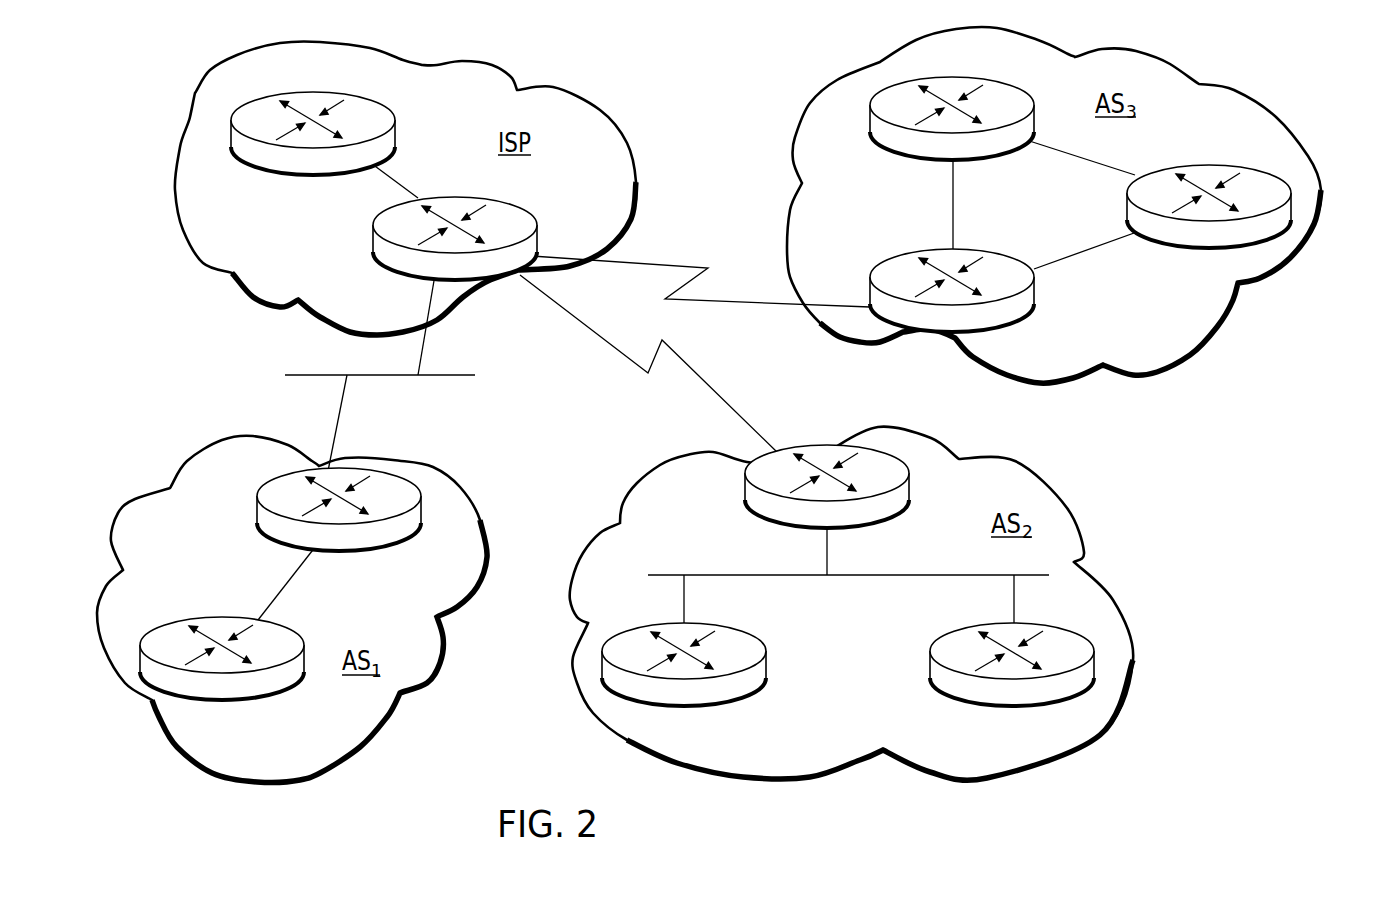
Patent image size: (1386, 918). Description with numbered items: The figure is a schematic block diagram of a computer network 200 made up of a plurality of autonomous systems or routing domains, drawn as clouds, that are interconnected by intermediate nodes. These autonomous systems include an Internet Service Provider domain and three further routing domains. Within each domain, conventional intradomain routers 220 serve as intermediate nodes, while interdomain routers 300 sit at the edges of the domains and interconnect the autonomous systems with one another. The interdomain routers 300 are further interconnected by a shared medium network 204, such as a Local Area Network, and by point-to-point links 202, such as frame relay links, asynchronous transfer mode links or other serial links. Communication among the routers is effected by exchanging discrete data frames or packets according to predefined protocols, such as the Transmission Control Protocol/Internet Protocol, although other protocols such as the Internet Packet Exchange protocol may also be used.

The computer network 200 is at (1352, 100).
The point-to-point link 202 is at (783, 309).
The shared medium network 204 is at (438, 378).
The intradomain router 220 is at (312, 90).
The interdomain router 300 is at (526, 212).